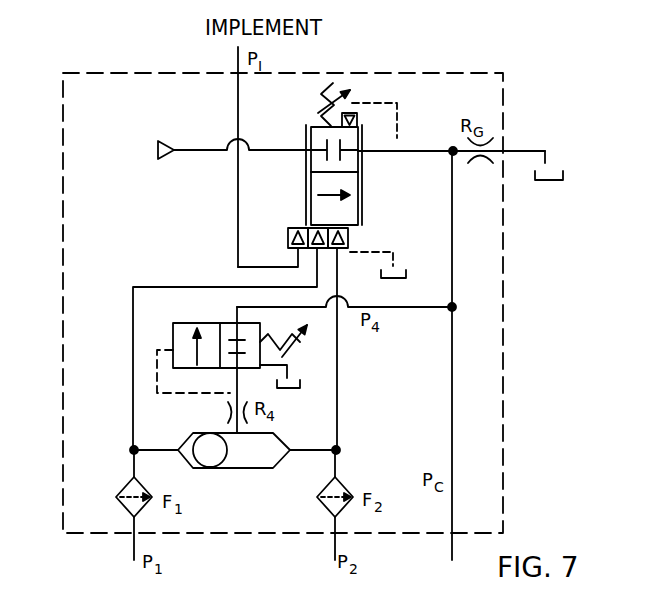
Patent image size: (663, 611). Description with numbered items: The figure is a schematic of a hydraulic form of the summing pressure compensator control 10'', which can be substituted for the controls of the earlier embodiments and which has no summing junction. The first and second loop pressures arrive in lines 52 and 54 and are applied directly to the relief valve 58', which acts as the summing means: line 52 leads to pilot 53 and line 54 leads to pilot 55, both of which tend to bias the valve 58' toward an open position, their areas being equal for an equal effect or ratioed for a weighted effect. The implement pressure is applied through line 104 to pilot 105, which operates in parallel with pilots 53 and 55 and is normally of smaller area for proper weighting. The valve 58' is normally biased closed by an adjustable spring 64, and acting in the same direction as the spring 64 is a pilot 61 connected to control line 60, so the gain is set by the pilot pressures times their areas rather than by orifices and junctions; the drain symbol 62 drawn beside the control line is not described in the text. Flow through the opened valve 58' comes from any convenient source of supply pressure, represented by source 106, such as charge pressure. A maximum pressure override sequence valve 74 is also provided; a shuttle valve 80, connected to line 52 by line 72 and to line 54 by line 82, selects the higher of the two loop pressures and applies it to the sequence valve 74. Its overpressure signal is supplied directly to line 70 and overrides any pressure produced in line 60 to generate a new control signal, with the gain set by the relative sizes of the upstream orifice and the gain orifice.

The compensator control 10'' is at (555, 343).
The line 52 is at (217, 286).
The pilot 53 is at (310, 249).
The line 54 is at (337, 412).
The pilot 55 is at (340, 250).
The relief valve 58' is at (370, 175).
The control line 60 is at (407, 149).
The pilot 61 is at (357, 113).
The reservoir 62 is at (542, 182).
The adjustable spring 64 is at (328, 87).
The line 70 is at (452, 442).
The line 72 is at (157, 447).
The sequence valve 74 is at (173, 328).
The shuttle valve 80 is at (240, 470).
The line 82 is at (315, 455).
The line 104 is at (236, 193).
The pilot 105 is at (293, 229).
The source 106 is at (158, 148).